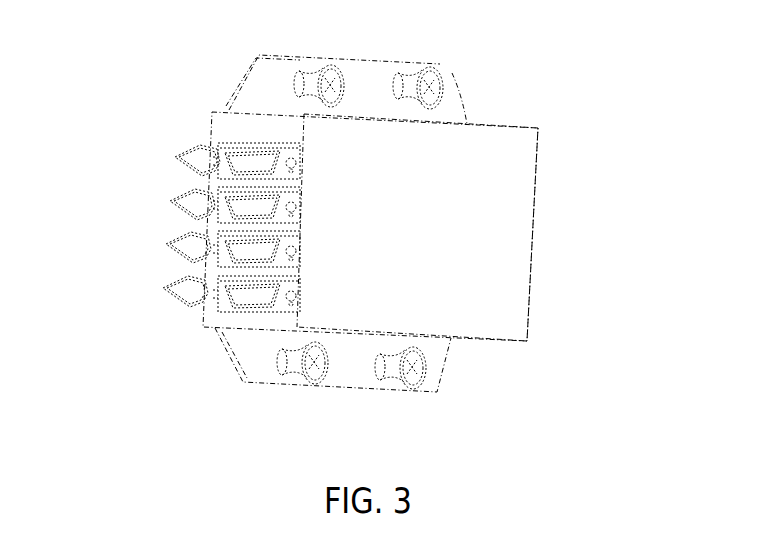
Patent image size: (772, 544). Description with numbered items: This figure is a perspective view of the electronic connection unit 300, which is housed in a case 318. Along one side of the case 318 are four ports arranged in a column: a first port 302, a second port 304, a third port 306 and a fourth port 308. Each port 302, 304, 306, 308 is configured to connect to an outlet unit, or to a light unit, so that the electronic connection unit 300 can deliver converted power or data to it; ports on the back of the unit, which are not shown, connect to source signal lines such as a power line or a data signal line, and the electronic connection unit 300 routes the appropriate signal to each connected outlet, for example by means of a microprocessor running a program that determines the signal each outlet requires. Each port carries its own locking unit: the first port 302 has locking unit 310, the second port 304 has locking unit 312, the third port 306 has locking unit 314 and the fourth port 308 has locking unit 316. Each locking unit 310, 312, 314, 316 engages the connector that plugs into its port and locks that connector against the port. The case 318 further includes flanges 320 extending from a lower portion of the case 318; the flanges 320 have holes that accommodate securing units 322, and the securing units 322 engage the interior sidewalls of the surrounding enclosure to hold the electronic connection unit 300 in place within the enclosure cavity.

The electronic connection unit 300 is at (567, 305).
The first port 302 is at (233, 167).
The second port 304 is at (242, 206).
The third port 306 is at (249, 249).
The fourth port 308 is at (236, 289).
The locking unit 310 is at (167, 153).
The locking unit 312 is at (163, 198).
The locking unit 314 is at (167, 242).
The locking unit 316 is at (180, 309).
The case 318 is at (447, 230).
The flanges 320 is at (454, 103).
The securing units 322 is at (339, 64).